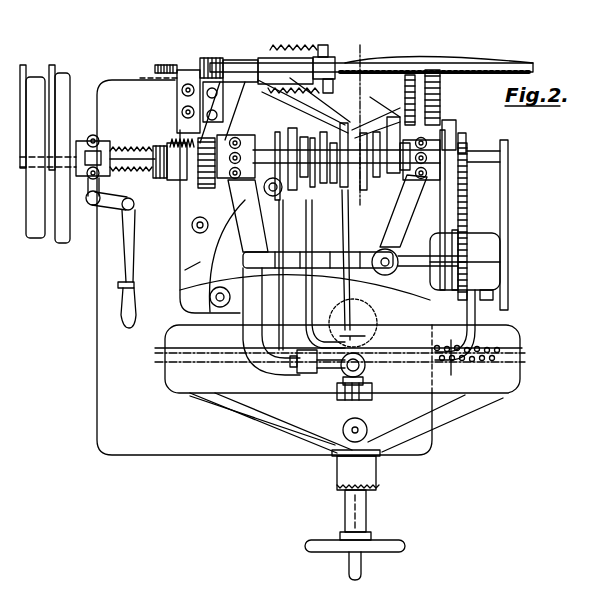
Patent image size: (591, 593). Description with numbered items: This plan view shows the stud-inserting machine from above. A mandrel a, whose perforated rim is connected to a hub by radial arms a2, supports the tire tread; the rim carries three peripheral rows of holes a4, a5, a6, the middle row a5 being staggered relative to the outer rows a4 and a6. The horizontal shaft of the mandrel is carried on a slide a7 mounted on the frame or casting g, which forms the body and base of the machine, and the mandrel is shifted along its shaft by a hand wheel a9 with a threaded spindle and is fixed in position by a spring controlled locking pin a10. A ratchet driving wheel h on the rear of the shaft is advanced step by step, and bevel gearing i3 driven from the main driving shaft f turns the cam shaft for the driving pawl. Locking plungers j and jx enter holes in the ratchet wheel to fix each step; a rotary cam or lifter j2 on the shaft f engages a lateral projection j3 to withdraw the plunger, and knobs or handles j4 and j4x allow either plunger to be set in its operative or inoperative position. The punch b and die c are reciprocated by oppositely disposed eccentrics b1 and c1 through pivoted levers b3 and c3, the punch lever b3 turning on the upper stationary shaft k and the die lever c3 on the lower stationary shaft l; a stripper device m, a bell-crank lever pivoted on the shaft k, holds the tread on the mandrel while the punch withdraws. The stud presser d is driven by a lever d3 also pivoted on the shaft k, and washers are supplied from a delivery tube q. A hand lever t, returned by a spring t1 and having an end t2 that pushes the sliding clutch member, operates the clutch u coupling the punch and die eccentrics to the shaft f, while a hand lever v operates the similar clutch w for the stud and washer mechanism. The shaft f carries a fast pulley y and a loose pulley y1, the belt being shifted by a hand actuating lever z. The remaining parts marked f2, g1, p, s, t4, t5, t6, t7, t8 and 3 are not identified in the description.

The mandrel a is at (262, 470).
The radial arms a2 is at (478, 406).
The outer row of perforations a4 is at (522, 372).
The middle row of perforations a5 is at (522, 356).
The outer row of perforations a6 is at (520, 350).
The slide a7 is at (370, 375).
The hand wheel a9 is at (382, 540).
The spring controlled locking pin a10 is at (380, 456).
The punch b is at (255, 405).
The punch eccentric b1 is at (374, 107).
The punch lever b3 is at (297, 362).
The die c is at (274, 175).
The die eccentric c1 is at (325, 167).
The die lever c3 is at (325, 190).
The stud presser d is at (352, 360).
The stud presser lever d3 is at (410, 210).
The main driving shaft f is at (490, 165).
The gear f2 is at (300, 136).
The frame or casting g is at (190, 254).
The gear g1 is at (345, 422).
The ratchet driving wheel h is at (500, 68).
The bevel gearing i3 is at (185, 140).
The locking plunger j is at (445, 80).
The rotary cam or lifter j2 is at (130, 152).
The lateral projection j3 is at (160, 172).
The knob or handle j4 is at (470, 75).
The second locking plunger jx is at (412, 80).
The knob or handle j4x is at (430, 78).
The upper stationary shaft k is at (185, 270).
The lower stationary shaft l is at (279, 292).
The stripper device m is at (305, 256).
The balls p is at (467, 362).
The washer delivery tube q is at (368, 318).
The arm s is at (408, 212).
The hand lever t is at (300, 50).
The spring t1 is at (168, 65).
The end of hand lever t2 is at (160, 98).
The stop t4 is at (324, 45).
The stop t5 is at (332, 60).
The slide block t6 is at (218, 58).
The springs t7 is at (272, 85).
The slide t8 is at (243, 60).
The clutch u is at (285, 140).
The hand lever v is at (340, 198).
The clutch w is at (358, 122).
The fast pulley y is at (35, 238).
The loose pulley y1 is at (64, 243).
The hand actuating lever z is at (125, 257).
The section line 3 is at (362, 117).